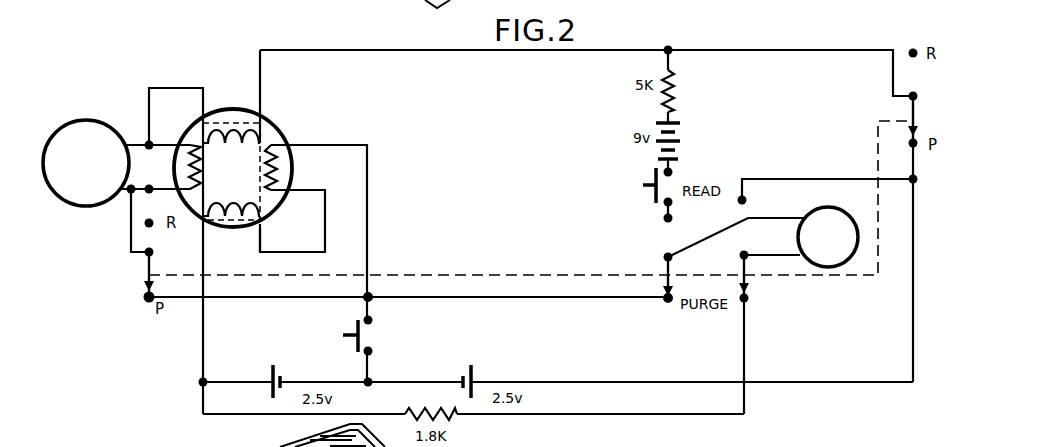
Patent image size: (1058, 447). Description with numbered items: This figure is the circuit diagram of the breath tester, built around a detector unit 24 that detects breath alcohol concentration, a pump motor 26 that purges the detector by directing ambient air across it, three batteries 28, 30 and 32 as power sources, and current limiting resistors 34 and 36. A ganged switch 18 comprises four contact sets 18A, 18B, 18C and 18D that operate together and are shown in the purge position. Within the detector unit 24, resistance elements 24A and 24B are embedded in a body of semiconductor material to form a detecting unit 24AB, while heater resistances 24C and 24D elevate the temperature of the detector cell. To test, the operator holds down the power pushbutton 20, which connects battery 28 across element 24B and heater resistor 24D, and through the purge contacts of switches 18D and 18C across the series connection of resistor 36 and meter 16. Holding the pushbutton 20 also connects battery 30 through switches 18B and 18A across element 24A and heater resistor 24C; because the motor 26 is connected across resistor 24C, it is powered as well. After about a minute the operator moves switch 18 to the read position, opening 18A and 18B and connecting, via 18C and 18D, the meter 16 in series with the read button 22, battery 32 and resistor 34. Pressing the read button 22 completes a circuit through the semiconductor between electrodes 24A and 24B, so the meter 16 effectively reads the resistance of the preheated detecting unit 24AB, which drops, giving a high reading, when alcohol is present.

The meter 16 is at (845, 212).
The ganged switch 18 is at (457, 273).
The switch contact set 18A is at (147, 287).
The switch contact set 18B is at (917, 125).
The switch contact set 18C is at (660, 262).
The switch contact set 18D is at (740, 265).
The power pushbutton 20 is at (424, 333).
The read button 22 is at (566, 181).
The detector unit 24 is at (283, 125).
The resistance element 24A is at (233, 127).
The resistance element 24B is at (212, 197).
The heater resistance 24C is at (205, 167).
The heater resistance 24D is at (283, 175).
The detecting unit 24AB is at (260, 253).
The pump motor 26 is at (90, 120).
The battery 28 is at (273, 367).
The battery 30 is at (471, 368).
The battery 32 is at (683, 132).
The current limiting resistor 34 is at (673, 85).
The current limiting resistor 36 is at (457, 416).